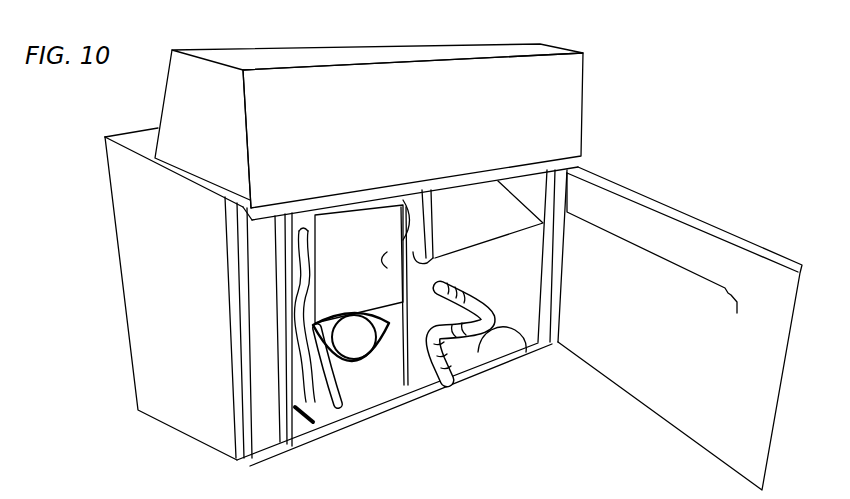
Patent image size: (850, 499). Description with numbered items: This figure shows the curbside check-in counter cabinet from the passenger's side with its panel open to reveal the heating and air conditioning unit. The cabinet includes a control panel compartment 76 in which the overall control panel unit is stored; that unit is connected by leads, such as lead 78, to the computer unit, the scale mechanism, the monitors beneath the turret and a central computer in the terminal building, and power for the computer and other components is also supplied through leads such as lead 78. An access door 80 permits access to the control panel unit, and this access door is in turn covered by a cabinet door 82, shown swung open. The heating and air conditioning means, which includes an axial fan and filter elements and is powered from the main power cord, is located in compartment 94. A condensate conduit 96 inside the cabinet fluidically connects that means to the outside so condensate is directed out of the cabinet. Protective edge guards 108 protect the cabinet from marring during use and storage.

The control panel compartment 76 is at (336, 296).
The lead 78 is at (303, 245).
The access door 80 is at (387, 276).
The cabinet door 82 is at (662, 207).
The compartment 94 is at (382, 358).
The condensate conduit 96 is at (460, 370).
The protective edge guards 108 is at (243, 353).